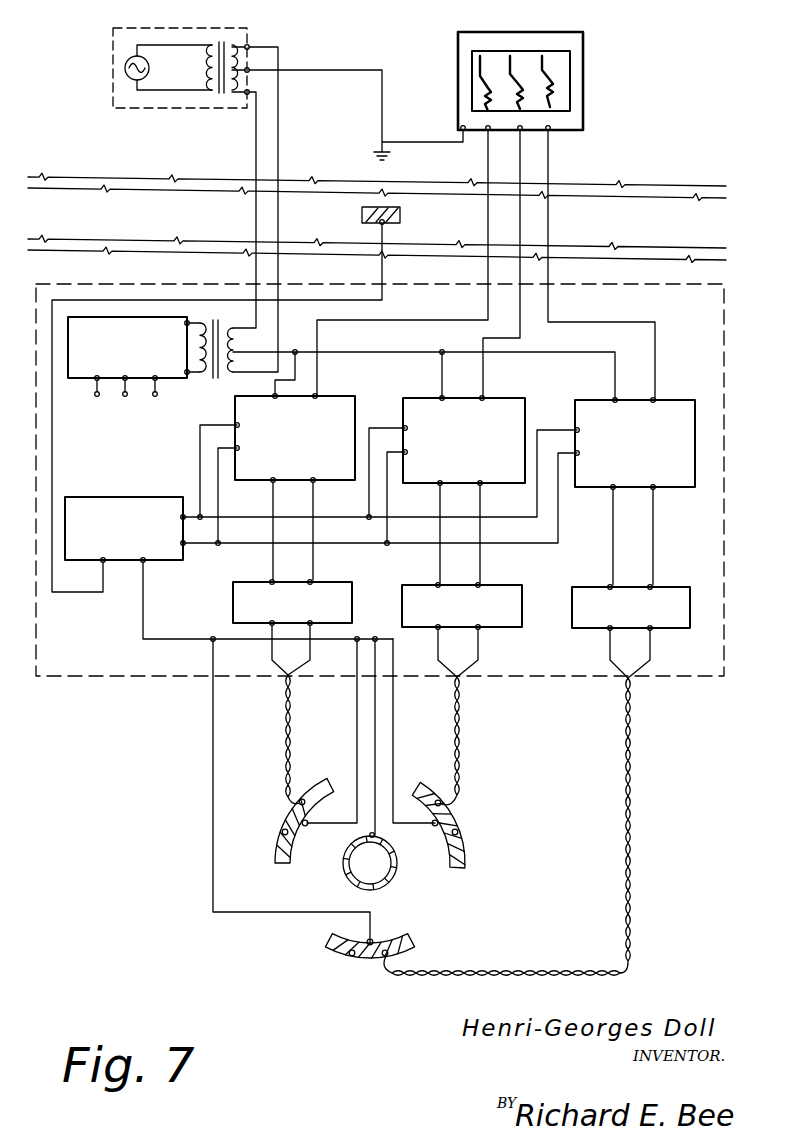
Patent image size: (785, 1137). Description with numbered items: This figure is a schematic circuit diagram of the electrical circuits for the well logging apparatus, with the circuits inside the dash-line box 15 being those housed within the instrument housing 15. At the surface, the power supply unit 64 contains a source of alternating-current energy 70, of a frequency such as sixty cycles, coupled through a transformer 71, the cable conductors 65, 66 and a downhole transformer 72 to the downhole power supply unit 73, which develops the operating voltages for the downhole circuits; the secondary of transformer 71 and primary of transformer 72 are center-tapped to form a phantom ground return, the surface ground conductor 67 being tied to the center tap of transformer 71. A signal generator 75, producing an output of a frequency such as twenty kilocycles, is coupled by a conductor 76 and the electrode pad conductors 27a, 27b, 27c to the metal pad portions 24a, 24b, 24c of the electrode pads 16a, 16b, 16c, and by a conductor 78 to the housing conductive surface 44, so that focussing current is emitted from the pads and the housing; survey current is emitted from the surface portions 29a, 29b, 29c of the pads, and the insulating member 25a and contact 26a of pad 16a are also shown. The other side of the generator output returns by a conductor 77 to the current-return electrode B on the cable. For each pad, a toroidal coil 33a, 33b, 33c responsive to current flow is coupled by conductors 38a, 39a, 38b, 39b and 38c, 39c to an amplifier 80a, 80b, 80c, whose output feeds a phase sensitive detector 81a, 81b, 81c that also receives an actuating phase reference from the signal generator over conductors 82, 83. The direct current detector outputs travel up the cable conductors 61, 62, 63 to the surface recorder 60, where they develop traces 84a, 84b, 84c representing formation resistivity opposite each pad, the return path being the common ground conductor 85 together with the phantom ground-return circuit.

The instrument housing 15 is at (86, 676).
The electrode pad 16a is at (272, 852).
The electrode pad 16b is at (468, 847).
The electrode pad 16c is at (418, 938).
The electrode pad body 24a is at (279, 846).
The electrode pad body 24b is at (468, 860).
The electrode pad body 24c is at (343, 950).
The insulating member 25a is at (282, 876).
The contact terminal 26a is at (305, 838).
The electrode pad conductor 27a is at (357, 730).
The electrode pad conductor 27b is at (393, 712).
The electrode pad conductor 27c is at (213, 752).
The survey current electrode surface 29a is at (294, 812).
The survey current electrode surface 29b is at (452, 816).
The survey current electrode surface 29c is at (370, 962).
The toroidal coil 33a is at (280, 828).
The toroidal coil 33b is at (462, 834).
The toroidal coil 33c is at (358, 958).
The conductor 38a is at (272, 646).
The conductor 38b is at (438, 646).
The conductor 38c is at (610, 644).
The conductor 39a is at (310, 646).
The conductor 39b is at (478, 646).
The conductor 39c is at (650, 646).
The instrument housing conductive surface 44 is at (388, 884).
The recorder 60 is at (583, 88).
The cable conductor 61 is at (484, 214).
The cable conductor 62 is at (488, 204).
The cable conductor 63 is at (548, 208).
The surface power supply unit 64 is at (113, 38).
The cable conductor 65 is at (256, 220).
The cable conductor 66 is at (280, 210).
The surface equipment ground conductor 67 is at (334, 72).
The source of alternating-current energy 70 is at (125, 68).
The transformer 71 is at (232, 38).
The downhole transformer 72 is at (214, 384).
The downhole power supply unit 73 is at (68, 348).
The signal generator 75 is at (100, 497).
The conductor 76 is at (143, 604).
The conductor 77 is at (384, 300).
The conductor 78 is at (378, 824).
The amplifier 80a is at (233, 596).
The amplifier 80b is at (512, 585).
The amplifier 80c is at (676, 587).
The phase sensitive detector 81a is at (338, 396).
The phase sensitive detector 81b is at (505, 398).
The phase sensitive detector 81c is at (670, 400).
The conductor 82 is at (200, 442).
The conductor 83 is at (218, 462).
The recorder trace 84a is at (480, 58).
The recorder trace 84b is at (512, 56).
The recorder trace 84c is at (544, 56).
The common ground conductor 85 is at (358, 352).
The current-return electrode B is at (404, 218).